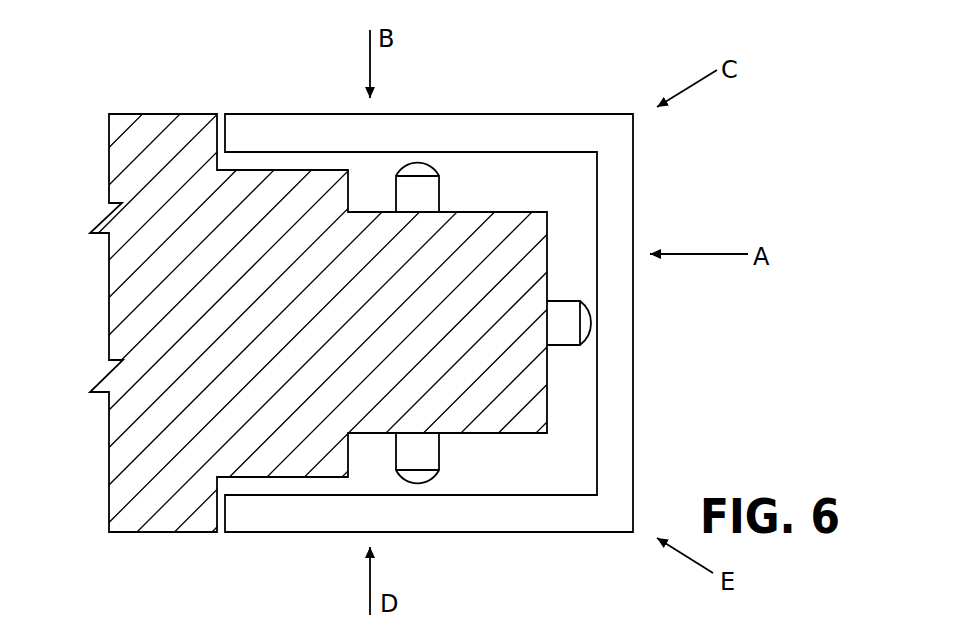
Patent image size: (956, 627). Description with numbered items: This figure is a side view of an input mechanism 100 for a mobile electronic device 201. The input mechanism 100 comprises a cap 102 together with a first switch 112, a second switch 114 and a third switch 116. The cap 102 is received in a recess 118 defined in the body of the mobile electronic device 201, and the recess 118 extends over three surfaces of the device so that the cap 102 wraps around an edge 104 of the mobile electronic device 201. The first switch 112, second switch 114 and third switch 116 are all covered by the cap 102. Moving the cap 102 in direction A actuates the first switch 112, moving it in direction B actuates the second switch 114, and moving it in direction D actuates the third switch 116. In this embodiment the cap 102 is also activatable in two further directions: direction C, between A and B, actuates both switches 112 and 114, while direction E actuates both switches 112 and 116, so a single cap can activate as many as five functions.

The input mechanism 100 is at (607, 82).
The cap 102 is at (633, 330).
The edge 104 is at (219, 113).
The first switch 112 is at (565, 298).
The second switch 114 is at (440, 192).
The third switch 116 is at (440, 452).
The recess 118 is at (266, 170).
The mobile electronic device 201 is at (140, 533).